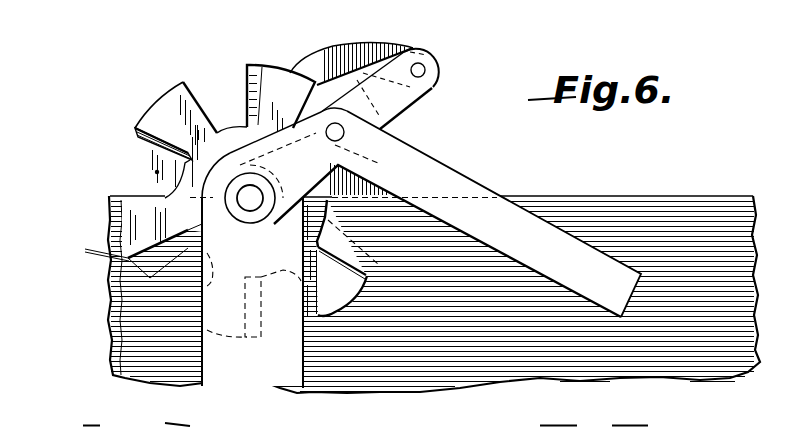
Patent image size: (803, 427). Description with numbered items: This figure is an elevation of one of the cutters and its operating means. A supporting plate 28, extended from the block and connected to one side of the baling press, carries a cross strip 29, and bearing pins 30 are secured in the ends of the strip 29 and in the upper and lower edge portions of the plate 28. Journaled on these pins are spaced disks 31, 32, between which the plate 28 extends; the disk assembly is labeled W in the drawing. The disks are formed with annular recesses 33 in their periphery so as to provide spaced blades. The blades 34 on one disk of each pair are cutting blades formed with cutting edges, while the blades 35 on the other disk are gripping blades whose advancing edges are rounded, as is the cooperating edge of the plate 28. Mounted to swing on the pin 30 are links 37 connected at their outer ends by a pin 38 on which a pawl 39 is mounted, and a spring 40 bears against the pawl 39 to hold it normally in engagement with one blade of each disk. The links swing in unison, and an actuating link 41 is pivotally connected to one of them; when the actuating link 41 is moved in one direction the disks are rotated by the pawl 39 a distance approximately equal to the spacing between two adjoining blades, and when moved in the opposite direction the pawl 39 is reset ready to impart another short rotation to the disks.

The supporting plate 28 is at (653, 203).
The cross strip 29 is at (290, 370).
The bearing pins 30 is at (380, 187).
The disk 31 is at (298, 221).
The disk 32 is at (253, 65).
The annular recesses 33 is at (218, 103).
The cutting blades 34 is at (143, 128).
The gripping blades 35 is at (157, 174).
The ratchet wheel W is at (163, 176).
The links 37 is at (409, 107).
The pin 38 is at (421, 67).
The pawl 39 is at (327, 57).
The spring 40 is at (362, 43).
The actuating link 41 is at (497, 215).